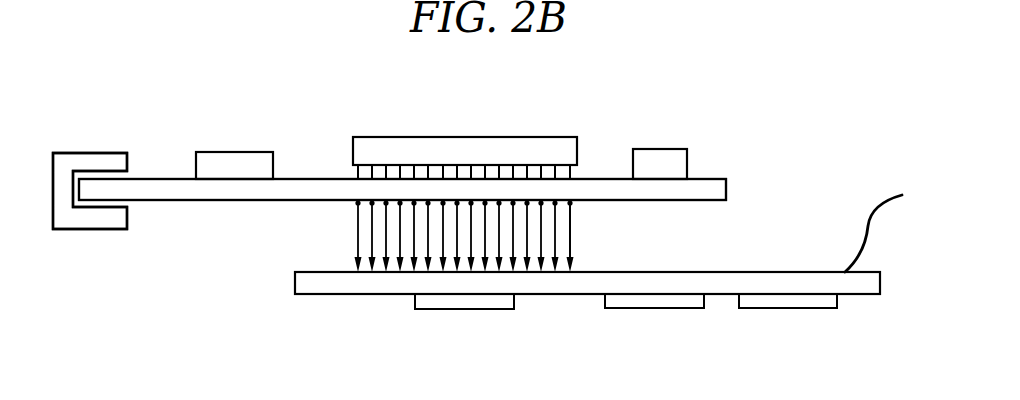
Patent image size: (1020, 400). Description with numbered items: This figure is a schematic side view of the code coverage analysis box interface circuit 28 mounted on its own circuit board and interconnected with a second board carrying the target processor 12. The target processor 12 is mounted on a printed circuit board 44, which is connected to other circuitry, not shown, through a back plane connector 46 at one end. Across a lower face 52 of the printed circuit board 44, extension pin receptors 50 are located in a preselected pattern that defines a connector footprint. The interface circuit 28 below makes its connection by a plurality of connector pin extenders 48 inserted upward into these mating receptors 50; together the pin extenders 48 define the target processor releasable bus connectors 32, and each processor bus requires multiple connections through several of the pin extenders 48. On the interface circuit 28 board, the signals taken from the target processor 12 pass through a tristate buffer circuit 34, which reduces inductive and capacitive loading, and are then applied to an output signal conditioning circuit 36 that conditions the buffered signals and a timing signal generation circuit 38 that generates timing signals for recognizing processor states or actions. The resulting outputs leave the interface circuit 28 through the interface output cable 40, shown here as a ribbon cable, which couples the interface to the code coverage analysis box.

The target processor 12 is at (466, 137).
The interface circuit 28 is at (345, 307).
The target processor releasable bus connectors 32 is at (302, 218).
The tristate buffer circuit 34 is at (655, 308).
The output signal conditioning circuit 36 is at (463, 309).
The timing signal generation circuit 38 is at (787, 308).
The interface output cable 40 is at (868, 218).
The printed circuit board 44 is at (313, 190).
The back plane connector 46 is at (89, 153).
The connector pin extenders 48 is at (357, 234).
The extension pin receptors 50 is at (570, 203).
The lower face 52 is at (150, 200).